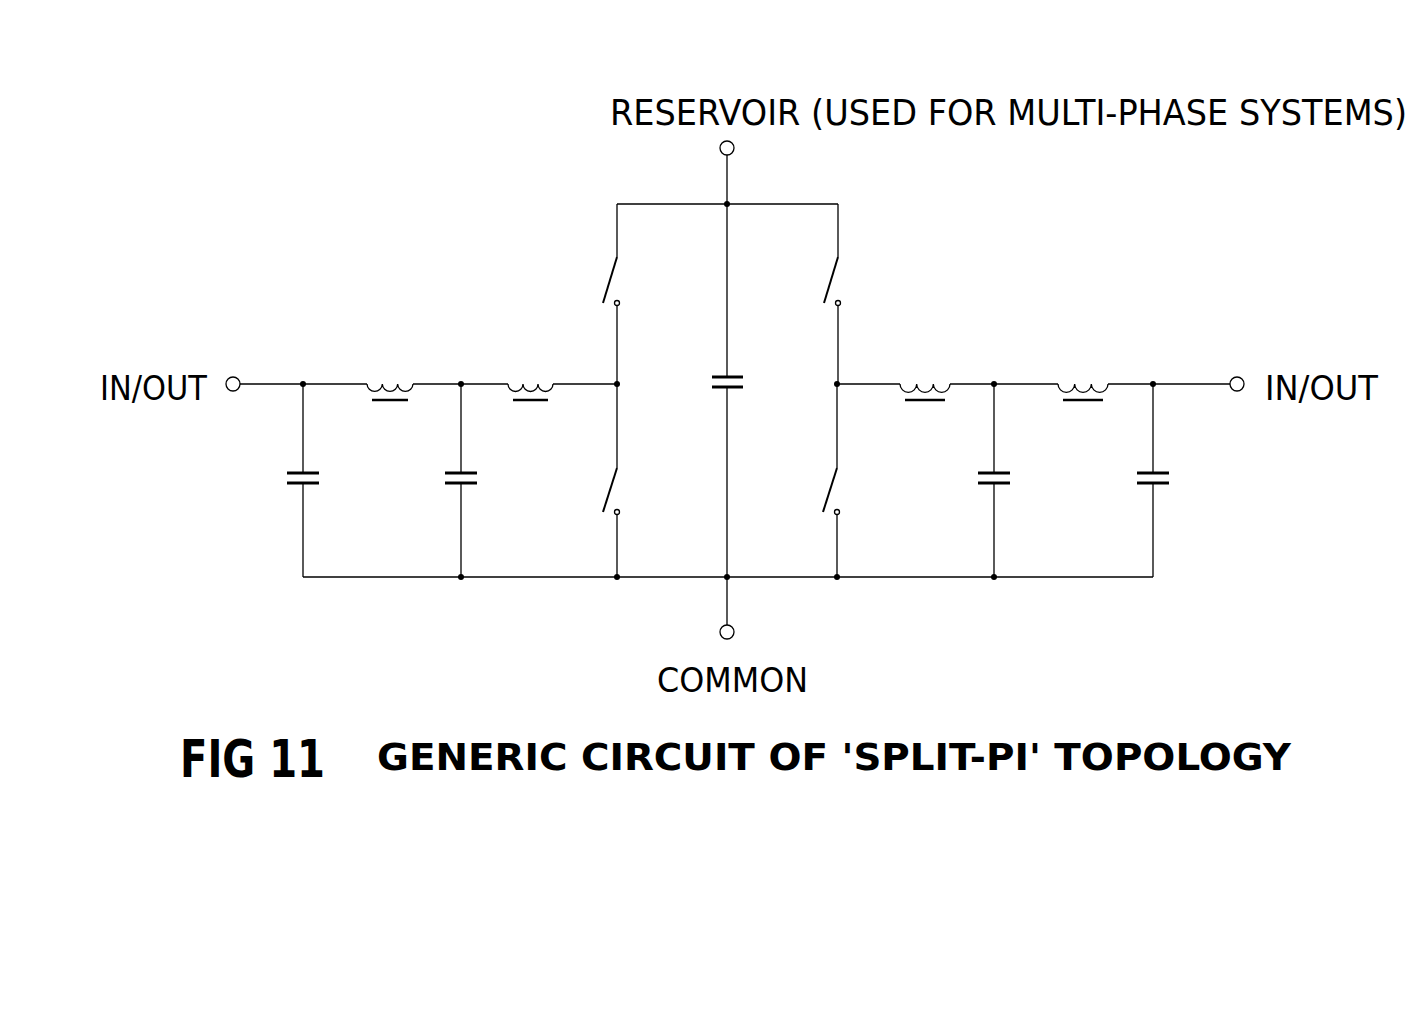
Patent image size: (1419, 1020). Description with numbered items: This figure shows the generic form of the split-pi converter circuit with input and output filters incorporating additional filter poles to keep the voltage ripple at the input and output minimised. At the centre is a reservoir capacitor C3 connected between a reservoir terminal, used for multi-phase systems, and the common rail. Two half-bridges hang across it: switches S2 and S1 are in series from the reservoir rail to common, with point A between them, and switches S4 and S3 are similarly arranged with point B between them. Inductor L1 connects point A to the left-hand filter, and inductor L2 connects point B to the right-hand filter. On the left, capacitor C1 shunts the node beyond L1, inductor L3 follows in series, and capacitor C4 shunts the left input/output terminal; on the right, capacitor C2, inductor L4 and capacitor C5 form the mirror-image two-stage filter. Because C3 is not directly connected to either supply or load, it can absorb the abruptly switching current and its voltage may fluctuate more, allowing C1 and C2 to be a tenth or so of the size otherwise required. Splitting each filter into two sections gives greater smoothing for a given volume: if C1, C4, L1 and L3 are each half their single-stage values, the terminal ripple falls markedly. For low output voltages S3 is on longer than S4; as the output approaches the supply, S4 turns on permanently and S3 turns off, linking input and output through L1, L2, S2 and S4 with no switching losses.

The inductor L1 is at (531, 364).
The inductor L2 is at (926, 363).
The inductor L3 is at (392, 364).
The inductor L4 is at (1084, 363).
The capacitor C1 is at (480, 480).
The capacitor C2 is at (1015, 480).
The capacitor C3 is at (747, 358).
The capacitor C4 is at (323, 480).
The capacitor C5 is at (1173, 480).
The switch S1 is at (636, 480).
The switch S2 is at (637, 294).
The switch S3 is at (857, 480).
The switch S4 is at (859, 294).
The point A is at (647, 375).
The point B is at (813, 375).